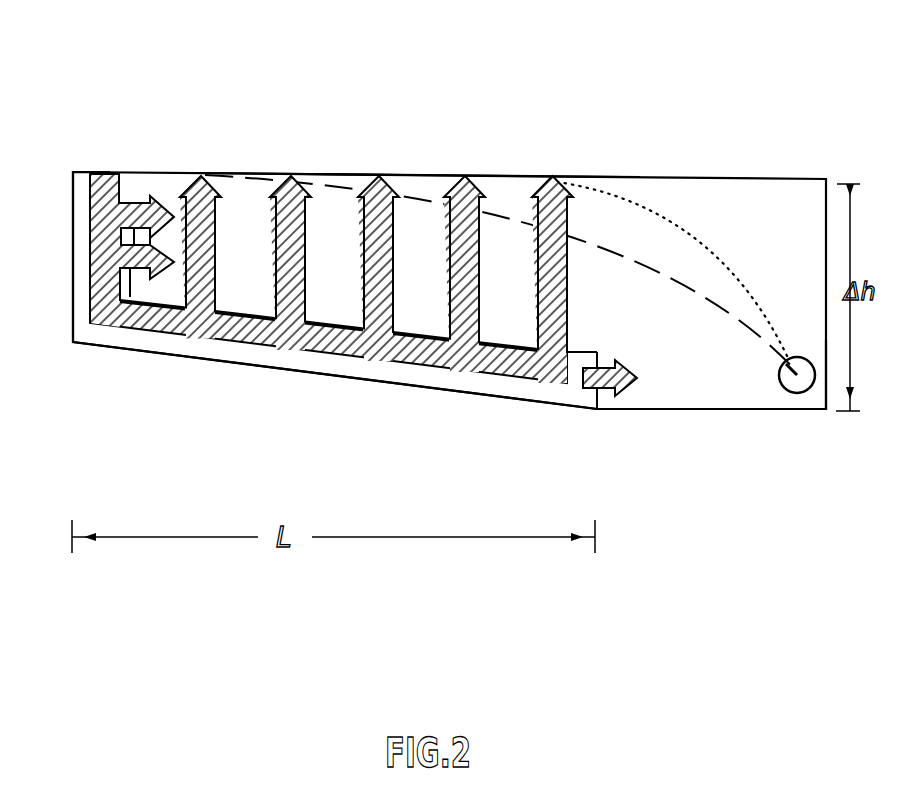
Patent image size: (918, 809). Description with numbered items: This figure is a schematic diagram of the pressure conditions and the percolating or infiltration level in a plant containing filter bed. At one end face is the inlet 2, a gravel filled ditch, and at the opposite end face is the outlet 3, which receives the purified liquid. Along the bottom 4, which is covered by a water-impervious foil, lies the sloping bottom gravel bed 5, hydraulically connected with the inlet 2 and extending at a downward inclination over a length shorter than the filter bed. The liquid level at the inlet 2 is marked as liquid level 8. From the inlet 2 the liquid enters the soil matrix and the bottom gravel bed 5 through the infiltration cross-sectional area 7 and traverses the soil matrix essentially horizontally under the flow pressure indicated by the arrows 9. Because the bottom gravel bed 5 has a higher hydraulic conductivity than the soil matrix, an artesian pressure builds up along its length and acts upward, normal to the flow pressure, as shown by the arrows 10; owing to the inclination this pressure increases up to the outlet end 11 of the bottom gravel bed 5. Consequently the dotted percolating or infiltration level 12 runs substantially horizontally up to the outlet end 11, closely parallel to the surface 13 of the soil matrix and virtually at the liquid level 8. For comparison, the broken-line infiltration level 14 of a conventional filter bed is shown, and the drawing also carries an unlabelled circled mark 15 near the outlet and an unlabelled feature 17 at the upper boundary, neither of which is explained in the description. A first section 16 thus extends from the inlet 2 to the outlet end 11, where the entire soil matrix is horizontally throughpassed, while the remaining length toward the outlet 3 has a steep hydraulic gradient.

The inlet 2 is at (82, 222).
The outlet 3 is at (790, 393).
The bottom 4 is at (660, 412).
The bottom gravel bed 5 is at (418, 373).
The infiltration cross-sectional area 7 is at (132, 202).
The liquid level 8 is at (113, 173).
The arrows 9 is at (171, 248).
The arrows 10 is at (553, 181).
The outlet end 11 is at (595, 355).
The percolating or infiltration level 12 is at (702, 242).
The surface 13 is at (345, 175).
The percolating or infiltration level 14 is at (632, 252).
The target point 15 is at (780, 373).
The first section 16 is at (387, 150).
The housing 17 is at (732, 168).